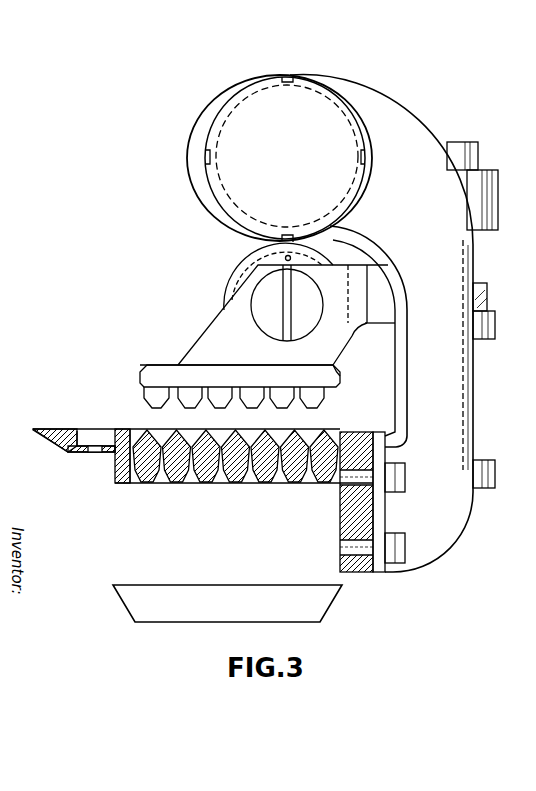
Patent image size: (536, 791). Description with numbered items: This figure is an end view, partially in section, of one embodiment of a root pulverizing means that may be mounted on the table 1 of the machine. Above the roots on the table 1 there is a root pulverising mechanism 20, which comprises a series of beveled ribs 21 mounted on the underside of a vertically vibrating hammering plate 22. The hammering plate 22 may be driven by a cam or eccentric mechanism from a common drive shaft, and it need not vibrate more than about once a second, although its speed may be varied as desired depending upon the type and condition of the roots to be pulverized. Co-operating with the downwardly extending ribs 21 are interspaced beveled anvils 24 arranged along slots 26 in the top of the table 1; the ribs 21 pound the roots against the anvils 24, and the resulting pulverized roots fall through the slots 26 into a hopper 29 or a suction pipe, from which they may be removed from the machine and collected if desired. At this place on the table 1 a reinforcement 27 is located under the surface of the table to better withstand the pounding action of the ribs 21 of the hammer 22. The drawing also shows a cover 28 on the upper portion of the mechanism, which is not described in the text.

The table 1 is at (59, 429).
The root pulverising mechanism 20 is at (233, 384).
The beveled ribs 21 is at (315, 408).
The hammering plate 22 is at (165, 371).
The beveled anvils 24 is at (200, 430).
The slots 26 is at (220, 484).
The reinforcement 27 is at (116, 484).
The cover ring 28 is at (224, 93).
The hopper 29 is at (276, 585).